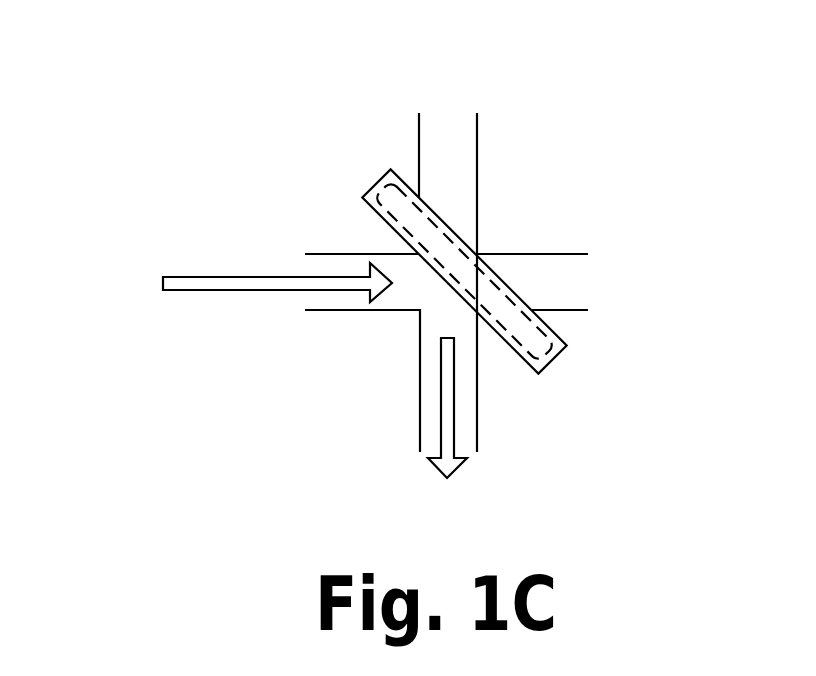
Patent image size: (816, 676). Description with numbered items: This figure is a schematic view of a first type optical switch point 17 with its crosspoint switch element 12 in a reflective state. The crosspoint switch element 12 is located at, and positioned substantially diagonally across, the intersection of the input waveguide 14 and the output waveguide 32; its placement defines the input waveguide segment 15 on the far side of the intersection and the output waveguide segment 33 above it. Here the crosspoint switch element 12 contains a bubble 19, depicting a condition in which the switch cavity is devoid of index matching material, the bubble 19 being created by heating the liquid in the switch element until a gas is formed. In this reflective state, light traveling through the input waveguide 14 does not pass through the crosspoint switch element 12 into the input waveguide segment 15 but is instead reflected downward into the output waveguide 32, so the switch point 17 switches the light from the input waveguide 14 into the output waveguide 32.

The first type optical switch point 17 is at (311, 52).
The crosspoint switch element 12 is at (380, 187).
The bubble 19 is at (535, 327).
The input waveguide 14 is at (368, 311).
The input waveguide segment 15 is at (552, 253).
The output waveguide segment 33 is at (477, 172).
The output waveguide 32 is at (478, 387).